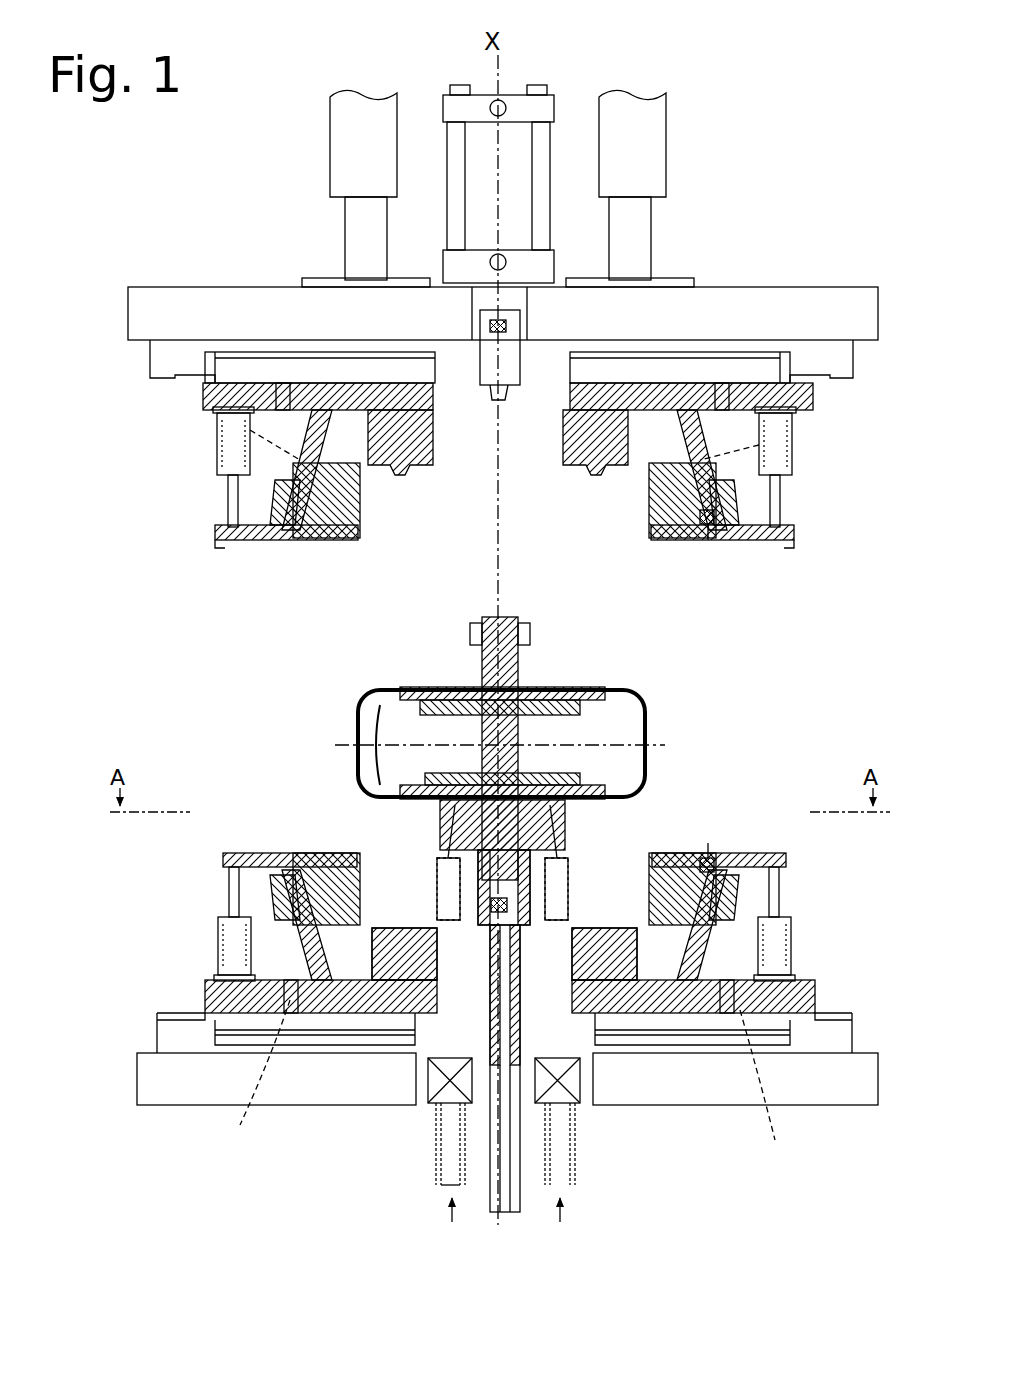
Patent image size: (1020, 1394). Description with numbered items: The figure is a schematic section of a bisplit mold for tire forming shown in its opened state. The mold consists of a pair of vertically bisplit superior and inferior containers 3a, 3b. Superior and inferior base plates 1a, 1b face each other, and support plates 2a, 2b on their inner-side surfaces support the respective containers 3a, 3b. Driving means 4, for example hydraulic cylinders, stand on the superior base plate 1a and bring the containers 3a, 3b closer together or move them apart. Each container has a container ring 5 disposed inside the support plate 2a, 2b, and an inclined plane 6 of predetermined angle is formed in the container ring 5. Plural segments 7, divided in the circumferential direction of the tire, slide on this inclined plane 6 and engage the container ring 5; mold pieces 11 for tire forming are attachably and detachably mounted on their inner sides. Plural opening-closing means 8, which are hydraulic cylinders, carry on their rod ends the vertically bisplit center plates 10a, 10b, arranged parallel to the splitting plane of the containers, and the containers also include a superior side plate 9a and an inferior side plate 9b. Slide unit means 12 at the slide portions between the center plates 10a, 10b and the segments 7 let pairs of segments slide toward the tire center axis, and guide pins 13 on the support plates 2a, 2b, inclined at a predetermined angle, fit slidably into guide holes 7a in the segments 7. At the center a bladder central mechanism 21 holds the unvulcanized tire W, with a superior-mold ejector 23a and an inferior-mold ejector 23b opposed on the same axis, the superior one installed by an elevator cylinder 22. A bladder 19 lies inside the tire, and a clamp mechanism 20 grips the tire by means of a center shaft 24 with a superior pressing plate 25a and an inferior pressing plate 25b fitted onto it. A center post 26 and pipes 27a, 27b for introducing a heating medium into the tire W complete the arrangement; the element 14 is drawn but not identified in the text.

The superior base plate 1a is at (790, 300).
The inferior base plate 1b is at (678, 1100).
The superior support plate 2a is at (210, 396).
The inferior support plate 2b is at (205, 998).
The superior container 3a is at (792, 490).
The inferior container 3b is at (790, 900).
The driving means 4 is at (328, 135).
The container ring 5 is at (232, 490).
The inclined plane 6 is at (282, 530).
The segment 7 is at (300, 538).
The guide hole 7a is at (250, 435).
The opening-closing means 8 is at (215, 445).
The superior side plate 9a is at (433, 440).
The inferior side plate 9b is at (400, 928).
The superior center plate 10a is at (215, 532).
The inferior center plate 10b is at (225, 858).
The mold piece for tire forming 11 is at (350, 512).
The slide unit means 12 is at (708, 545).
The guide pin 13 is at (320, 400).
The bearing 14 is at (704, 528).
The bladder 19 is at (360, 706).
The clamp mechanism 20 is at (590, 685).
The bladder central mechanism 21 is at (470, 935).
The elevator cylinder 22 is at (507, 88).
The superior-mold ejector 23a is at (508, 398).
The inferior-mold ejector 23b is at (512, 920).
The center shaft 24 is at (482, 660).
The superior pressing plate 25a is at (420, 690).
The inferior pressing plate 25b is at (420, 800).
The center post 26 is at (495, 1170).
The pipe 27a is at (440, 1135).
The pipe 27b is at (572, 1130).
The unvulcanized tire W is at (650, 712).